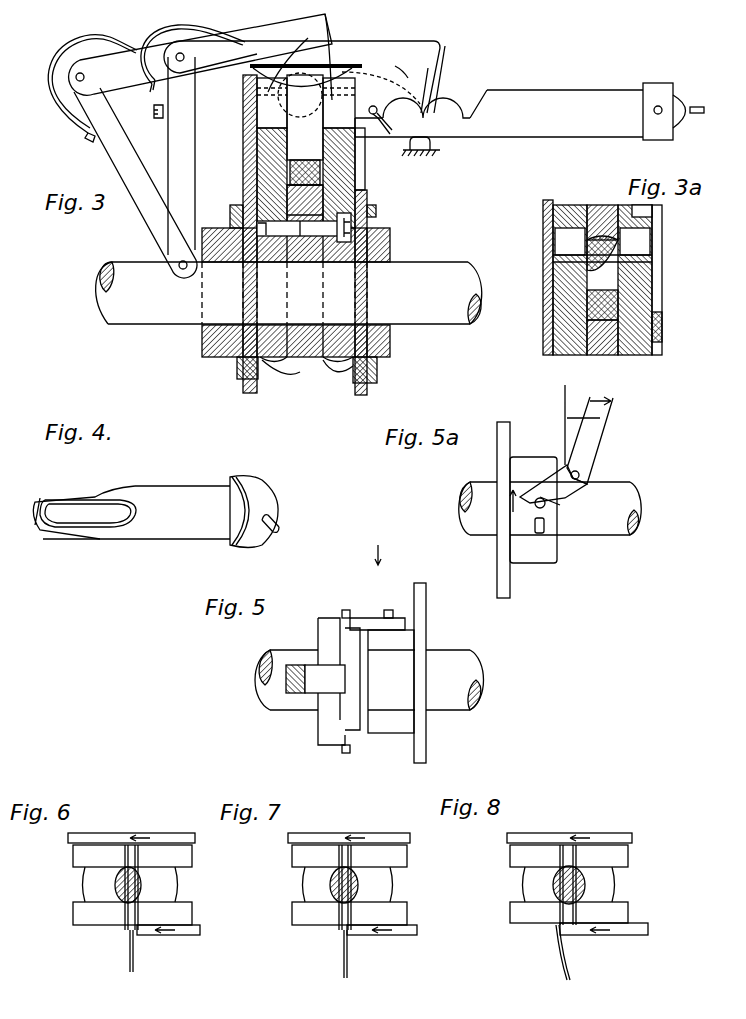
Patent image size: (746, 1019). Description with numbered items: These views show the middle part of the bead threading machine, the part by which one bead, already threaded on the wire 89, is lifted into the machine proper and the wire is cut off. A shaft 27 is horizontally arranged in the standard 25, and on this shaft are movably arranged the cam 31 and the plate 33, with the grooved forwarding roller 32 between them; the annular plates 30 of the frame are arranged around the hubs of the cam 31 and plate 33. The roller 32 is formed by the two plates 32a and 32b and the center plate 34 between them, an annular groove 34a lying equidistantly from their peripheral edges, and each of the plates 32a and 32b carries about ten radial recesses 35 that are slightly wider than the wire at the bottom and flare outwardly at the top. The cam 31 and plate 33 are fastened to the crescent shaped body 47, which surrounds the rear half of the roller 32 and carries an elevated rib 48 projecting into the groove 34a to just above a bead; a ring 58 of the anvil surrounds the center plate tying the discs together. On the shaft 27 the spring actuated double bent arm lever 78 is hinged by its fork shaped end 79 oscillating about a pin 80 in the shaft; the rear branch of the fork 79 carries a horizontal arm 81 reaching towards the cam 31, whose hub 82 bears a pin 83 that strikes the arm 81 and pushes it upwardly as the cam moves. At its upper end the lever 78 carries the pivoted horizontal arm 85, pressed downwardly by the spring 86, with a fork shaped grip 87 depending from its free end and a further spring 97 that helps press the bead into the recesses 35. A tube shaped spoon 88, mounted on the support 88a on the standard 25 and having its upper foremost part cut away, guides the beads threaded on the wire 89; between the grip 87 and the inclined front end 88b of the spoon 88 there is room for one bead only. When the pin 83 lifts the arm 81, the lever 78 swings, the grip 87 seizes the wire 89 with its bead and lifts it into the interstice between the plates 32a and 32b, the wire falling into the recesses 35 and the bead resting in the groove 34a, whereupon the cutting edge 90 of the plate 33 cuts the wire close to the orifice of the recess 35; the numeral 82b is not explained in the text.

In FIG. 3, the standard 25 is at (438, 152).
In FIG. 3, the shaft 27 is at (138, 312).
In FIG. 5A, the shaft 27 is at (595, 530).
In FIG. 5, the shaft 27 is at (262, 710).
In FIG. 3, the annular plate 30 is at (376, 212).
In FIG. 3, the cam 31 is at (243, 141).
In FIG. 3A, the cam 31 is at (543, 287).
In FIG. 5A, the cam 31 is at (500, 588).
In FIG. 5, the cam 31 is at (426, 606).
In FIG. 6, the cam 31 is at (100, 838).
In FIG. 7, the cam 31 is at (318, 838).
In FIG. 8, the cam 31 is at (540, 838).
In FIG. 3, the grooved roller 32 is at (307, 374).
In FIG. 3, the plate 32a is at (270, 150).
In FIG. 3A, the plate 32a is at (565, 312).
In FIG. 6, the plate 32a is at (172, 855).
In FIG. 7, the plate 32a is at (310, 871).
In FIG. 8, the plate 32a is at (620, 850).
In FIG. 3, the plate 32b is at (355, 172).
In FIG. 3A, the plate 32b is at (640, 350).
In FIG. 6, the plate 32b is at (180, 912).
In FIG. 7, the plate 32b is at (310, 910).
In FIG. 8, the plate 32b is at (625, 912).
In FIG. 3, the plate 33 is at (355, 383).
In FIG. 3A, the plate 33 is at (662, 326).
In FIG. 6, the plate 33 is at (182, 935).
In FIG. 7, the plate 33 is at (400, 935).
In FIG. 8, the plate 33 is at (630, 935).
In FIG. 3, the center plate 34 is at (330, 200).
In FIG. 3A, the center plate 34 is at (604, 352).
In FIG. 3, the annular groove 34a is at (305, 117).
In FIG. 3, the recess 35 is at (306, 103).
In FIG. 6, the recess 35 is at (126, 920).
In FIG. 7, the recess 35 is at (338, 920).
In FIG. 8, the recess 35 is at (560, 920).
In FIG. 3A, the crescent shaped body 47 is at (580, 212).
In FIG. 3A, the elevated rib 48 is at (608, 235).
In FIG. 3, the ring 58 is at (298, 168).
In FIG. 3A, the ring 58 is at (590, 352).
In FIG. 3, the double bent arm lever 78 is at (185, 125).
In FIG. 5A, the double bent arm lever 78 is at (566, 394).
In FIG. 5, the double bent arm lever 78 is at (296, 700).
In FIG. 3, the fork shaped end 79 is at (190, 207).
In FIG. 5A, the fork shaped end 79 is at (572, 434).
In FIG. 5, the fork shaped end 79 is at (318, 628).
In FIG. 5, the pin 80 is at (345, 610).
In FIG. 5A, the arm 81 is at (570, 502).
In FIG. 5, the arm 81 is at (370, 620).
In FIG. 5A, the hub 82 is at (545, 562).
In FIG. 5, the hub 82 is at (385, 725).
In FIG. 3, the hub section 82b is at (218, 340).
In FIG. 5A, the pin 83 is at (540, 533).
In FIG. 5, the pin 83 is at (390, 610).
In FIG. 3, the arm 85 is at (345, 77).
In FIG. 3, the spring 86 is at (150, 108).
In FIG. 3, the fork shaped grip 87 is at (442, 82).
In FIG. 3, the tube shaped spoon 88 is at (597, 128).
In FIG. 4, the tube shaped spoon 88 is at (203, 530).
In FIG. 3, the support 88a is at (432, 145).
In FIG. 3, the front end 88b is at (382, 122).
In FIG. 4, the front end 88b is at (42, 535).
In FIG. 3, the wire 89 is at (362, 110).
In FIG. 3A, the wire 89 is at (655, 252).
In FIG. 6, the wire 89 is at (127, 970).
In FIG. 7, the wire 89 is at (340, 968).
In FIG. 8, the wire 89 is at (563, 952).
In FIG. 3, the cutting edge 90 is at (365, 160).
In FIG. 3A, the cutting edge 90 is at (662, 280).
In FIG. 6, the cutting edge 90 is at (138, 932).
In FIG. 7, the cutting edge 90 is at (354, 934).
In FIG. 8, the cutting edge 90 is at (575, 934).
In FIG. 3, the spring 97 is at (306, 65).